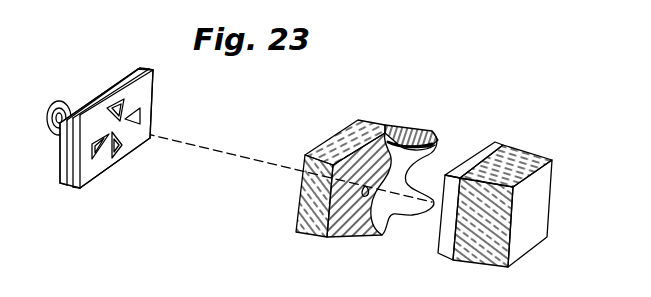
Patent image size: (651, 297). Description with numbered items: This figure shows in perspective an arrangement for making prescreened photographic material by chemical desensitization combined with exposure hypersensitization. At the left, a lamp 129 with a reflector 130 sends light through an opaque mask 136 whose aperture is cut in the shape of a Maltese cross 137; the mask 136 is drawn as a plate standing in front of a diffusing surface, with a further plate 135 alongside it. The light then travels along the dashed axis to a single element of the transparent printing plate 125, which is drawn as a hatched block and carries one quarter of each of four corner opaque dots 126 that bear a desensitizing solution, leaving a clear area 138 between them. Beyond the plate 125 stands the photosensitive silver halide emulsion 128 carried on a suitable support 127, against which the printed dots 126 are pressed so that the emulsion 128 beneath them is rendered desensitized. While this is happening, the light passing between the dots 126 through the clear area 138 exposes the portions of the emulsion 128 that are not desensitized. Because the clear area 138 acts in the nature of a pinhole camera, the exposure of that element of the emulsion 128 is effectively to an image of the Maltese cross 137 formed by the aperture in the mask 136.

The transparent printing plate 125 is at (338, 127).
The opaque dots 126 is at (405, 128).
The support 127 is at (530, 161).
The photosensitive silver halide emulsion 128 is at (494, 145).
The lamp 129 is at (69, 112).
The reflector 130 is at (55, 111).
The front plate 135 is at (137, 69).
The opaque mask 136 is at (153, 70).
The Maltese cross 137 is at (143, 117).
The clear area 138 is at (348, 236).